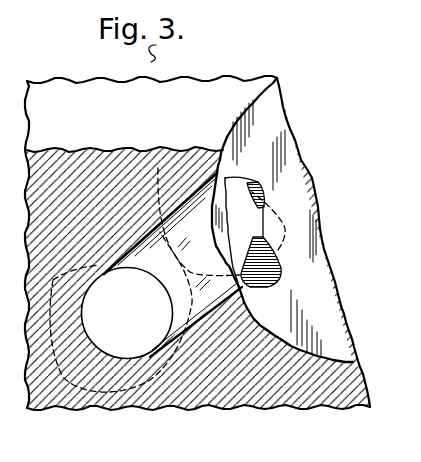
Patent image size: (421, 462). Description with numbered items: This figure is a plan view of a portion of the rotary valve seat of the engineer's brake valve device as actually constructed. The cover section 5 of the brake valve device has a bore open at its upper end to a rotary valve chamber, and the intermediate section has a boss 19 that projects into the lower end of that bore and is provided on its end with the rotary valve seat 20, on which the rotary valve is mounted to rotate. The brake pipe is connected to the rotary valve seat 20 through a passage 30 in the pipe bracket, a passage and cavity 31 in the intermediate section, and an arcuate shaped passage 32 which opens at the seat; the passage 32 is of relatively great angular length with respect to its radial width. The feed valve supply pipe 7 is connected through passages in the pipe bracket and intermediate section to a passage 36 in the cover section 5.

The cover section 5 is at (56, 401).
The feed valve supply pipe 7 is at (167, 345).
The boss 19 is at (351, 341).
The rotary valve seat 20 is at (317, 313).
The passage 30 is at (250, 252).
The passage and cavity 31 is at (245, 285).
The arcuate shaped passage 32 is at (238, 217).
The passage 36 is at (187, 335).